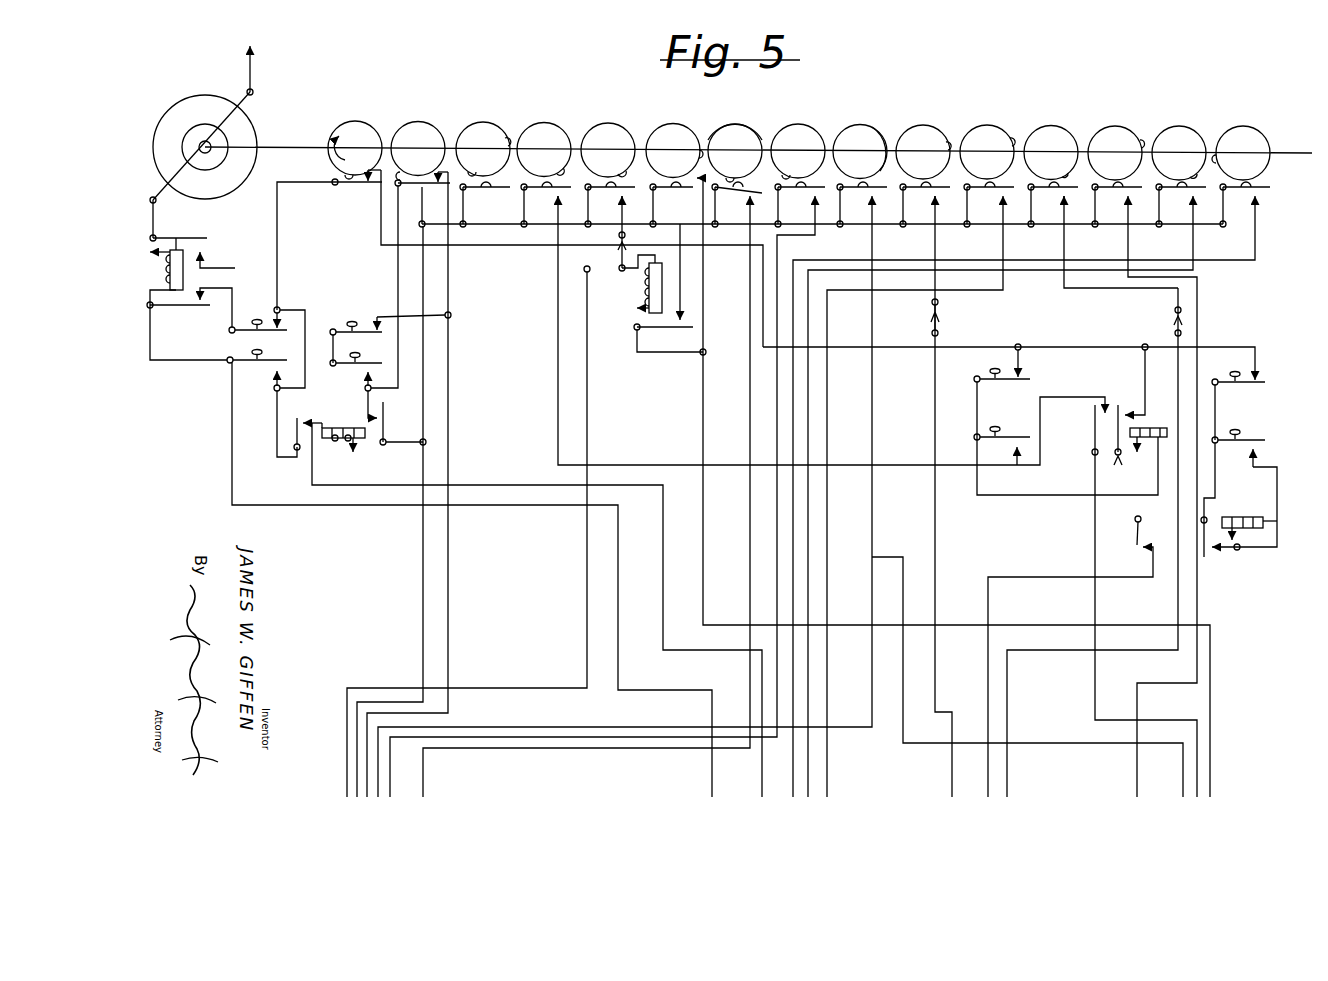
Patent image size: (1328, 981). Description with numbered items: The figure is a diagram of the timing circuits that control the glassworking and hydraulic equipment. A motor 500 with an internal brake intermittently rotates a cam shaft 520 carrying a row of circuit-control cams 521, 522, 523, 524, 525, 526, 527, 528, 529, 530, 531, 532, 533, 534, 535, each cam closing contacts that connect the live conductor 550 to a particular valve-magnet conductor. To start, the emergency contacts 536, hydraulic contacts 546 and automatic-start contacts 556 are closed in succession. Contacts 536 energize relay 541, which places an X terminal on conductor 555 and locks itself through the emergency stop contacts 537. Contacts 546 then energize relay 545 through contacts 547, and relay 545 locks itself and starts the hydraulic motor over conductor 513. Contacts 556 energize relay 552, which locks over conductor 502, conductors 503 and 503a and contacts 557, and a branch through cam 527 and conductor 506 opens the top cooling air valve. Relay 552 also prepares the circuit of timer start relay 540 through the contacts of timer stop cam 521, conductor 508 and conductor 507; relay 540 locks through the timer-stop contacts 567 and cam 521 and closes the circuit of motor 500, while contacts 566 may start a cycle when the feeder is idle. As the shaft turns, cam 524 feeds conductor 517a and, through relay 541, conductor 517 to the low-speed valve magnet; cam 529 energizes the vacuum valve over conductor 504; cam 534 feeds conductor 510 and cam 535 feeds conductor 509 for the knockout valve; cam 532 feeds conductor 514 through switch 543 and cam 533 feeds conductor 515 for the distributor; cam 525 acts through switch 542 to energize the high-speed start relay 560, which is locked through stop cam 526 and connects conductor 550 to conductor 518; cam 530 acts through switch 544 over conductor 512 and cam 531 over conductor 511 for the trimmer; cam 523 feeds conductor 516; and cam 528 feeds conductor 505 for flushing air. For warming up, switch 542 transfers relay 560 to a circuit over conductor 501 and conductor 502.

The motor 500 is at (172, 108).
The cam shaft 520 is at (297, 148).
The timer stop cam 521 is at (355, 141).
The circuit-control cam 522 is at (420, 162).
The circuit-control cam 523 is at (483, 162).
The circuit-control cam 524 is at (544, 162).
The circuit-control cam 525 is at (608, 162).
The stop cam 526 is at (674, 162).
The circuit-control cam 527 is at (735, 162).
The circuit-control cam 528 is at (798, 162).
The circuit-control cam 529 is at (860, 162).
The circuit-control cam 530 is at (923, 162).
The circuit-control cam 531 is at (987, 162).
The circuit-control cam 532 is at (1051, 162).
The circuit-control cam 533 is at (1116, 162).
The circuit-control cam 534 is at (1179, 162).
The circuit-control cam 535 is at (1241, 162).
The conductor 501 is at (590, 418).
The conductor 502 is at (423, 521).
The conductor 503 is at (367, 758).
The conductor 503a is at (452, 316).
The conductor 504 is at (428, 756).
The conductor 505 is at (763, 272).
The conductor 506 is at (752, 394).
The conductor 507 is at (232, 405).
The conductor 508 is at (312, 470).
The conductor 509 is at (793, 757).
The conductor 510 is at (808, 774).
The conductor 511 is at (827, 790).
The conductor 512 is at (952, 768).
The conductor 513 is at (988, 760).
The conductor 514 is at (1007, 781).
The conductor 515 is at (1199, 616).
The conductor 516 is at (1183, 775).
The conductor 517 is at (1197, 760).
The conductor 517a is at (556, 290).
The conductor 518 is at (703, 375).
The emergency contacts 536 is at (1008, 470).
The emergency stop contacts 537 is at (1028, 384).
The timer start relay 540 is at (175, 290).
The relay 541 is at (1158, 428).
The switch 542 is at (605, 250).
The switch 543 is at (1182, 322).
The switch 544 is at (942, 326).
The relay 545 is at (1278, 522).
The hydraulic contacts 546 is at (1262, 447).
The contacts 547 is at (1260, 388).
The conductor 550 is at (923, 228).
The relay 552 is at (345, 440).
The conductor 555 is at (905, 350).
The automatic-start contacts 556 is at (380, 370).
The contacts 557 is at (372, 318).
The high-speed start relay 560 is at (648, 290).
The contacts 566 is at (268, 368).
The timer-stop contacts 567 is at (280, 318).